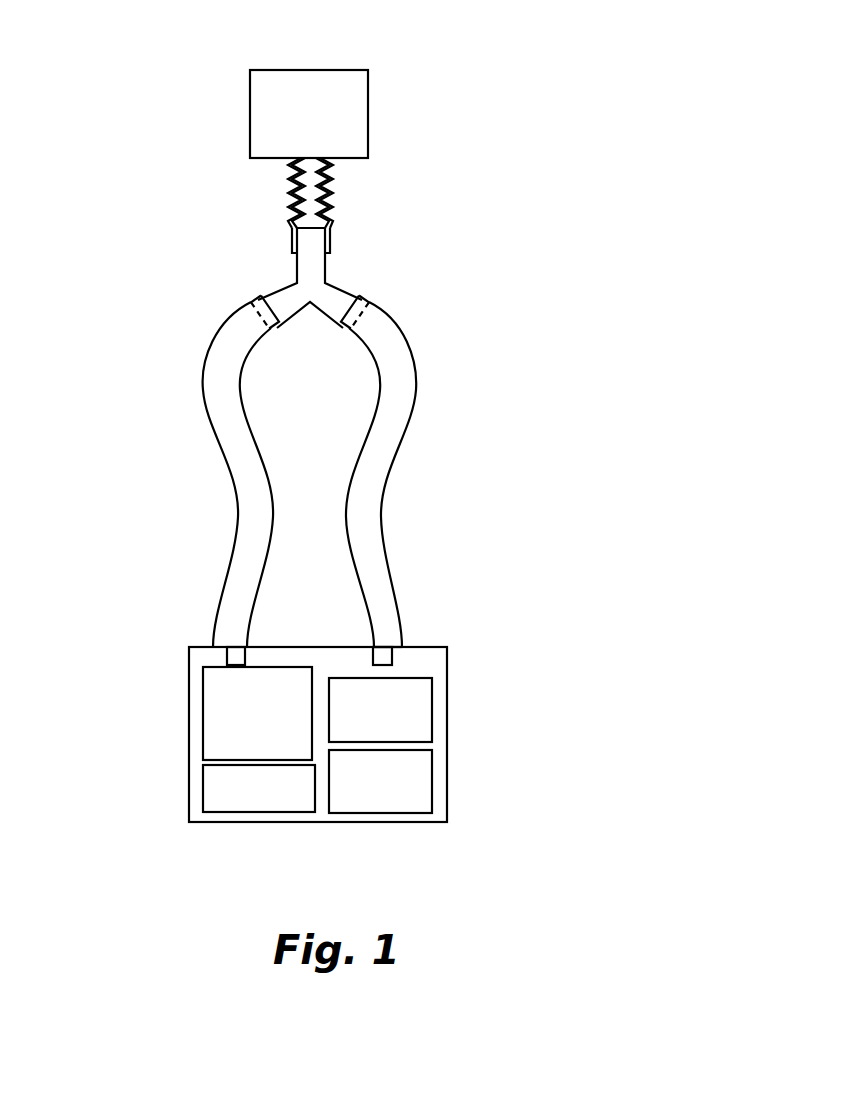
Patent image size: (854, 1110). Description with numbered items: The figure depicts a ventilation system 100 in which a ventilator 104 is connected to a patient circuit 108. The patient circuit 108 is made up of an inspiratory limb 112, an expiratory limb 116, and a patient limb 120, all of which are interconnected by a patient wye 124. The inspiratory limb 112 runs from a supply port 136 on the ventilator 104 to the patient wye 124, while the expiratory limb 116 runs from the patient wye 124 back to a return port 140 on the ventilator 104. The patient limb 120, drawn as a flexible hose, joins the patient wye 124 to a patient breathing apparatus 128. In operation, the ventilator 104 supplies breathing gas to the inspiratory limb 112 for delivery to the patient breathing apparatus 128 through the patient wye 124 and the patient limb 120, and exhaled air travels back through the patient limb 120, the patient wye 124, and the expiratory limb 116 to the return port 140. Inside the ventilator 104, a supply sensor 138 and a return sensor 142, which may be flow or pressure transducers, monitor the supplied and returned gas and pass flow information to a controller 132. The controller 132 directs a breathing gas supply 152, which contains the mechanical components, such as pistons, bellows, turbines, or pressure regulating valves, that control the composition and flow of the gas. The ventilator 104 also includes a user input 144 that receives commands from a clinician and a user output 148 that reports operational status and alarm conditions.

The ventilation system 100 is at (618, 211).
The ventilator 104 is at (448, 803).
The patient circuit 108 is at (214, 447).
The inspiratory limb 112 is at (235, 537).
The expiratory limb 116 is at (381, 500).
The patient limb 120 is at (331, 200).
The patient wye 124 is at (330, 290).
The patient breathing apparatus 128 is at (320, 70).
The controller 132 is at (203, 790).
The supply port 136 is at (233, 645).
The supply sensor 138 is at (227, 659).
The return port 140 is at (383, 643).
The return sensor 142 is at (393, 658).
The user input 144 is at (433, 717).
The user output 148 is at (402, 822).
The breathing gas supply 152 is at (203, 735).